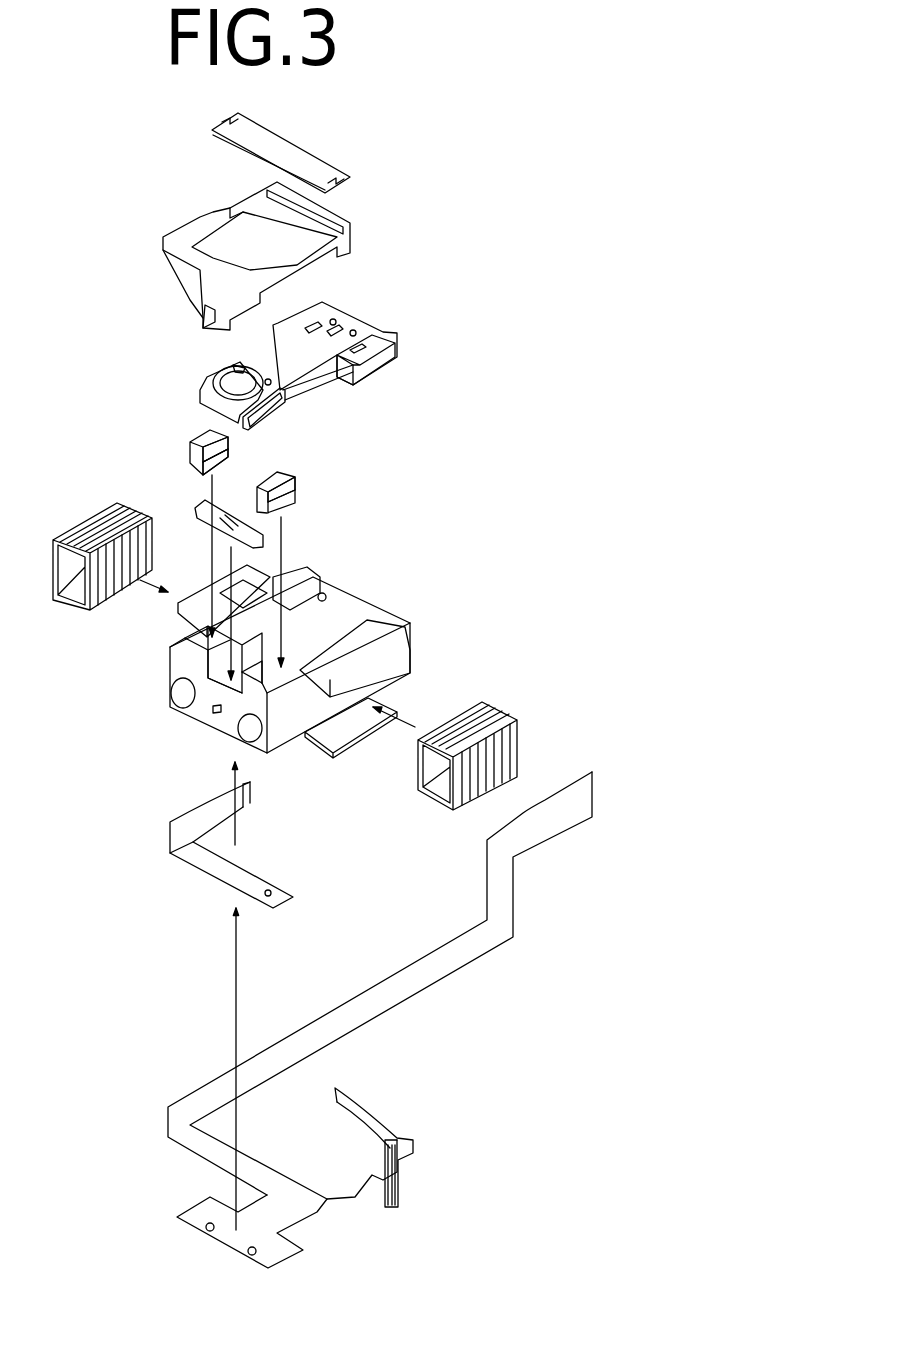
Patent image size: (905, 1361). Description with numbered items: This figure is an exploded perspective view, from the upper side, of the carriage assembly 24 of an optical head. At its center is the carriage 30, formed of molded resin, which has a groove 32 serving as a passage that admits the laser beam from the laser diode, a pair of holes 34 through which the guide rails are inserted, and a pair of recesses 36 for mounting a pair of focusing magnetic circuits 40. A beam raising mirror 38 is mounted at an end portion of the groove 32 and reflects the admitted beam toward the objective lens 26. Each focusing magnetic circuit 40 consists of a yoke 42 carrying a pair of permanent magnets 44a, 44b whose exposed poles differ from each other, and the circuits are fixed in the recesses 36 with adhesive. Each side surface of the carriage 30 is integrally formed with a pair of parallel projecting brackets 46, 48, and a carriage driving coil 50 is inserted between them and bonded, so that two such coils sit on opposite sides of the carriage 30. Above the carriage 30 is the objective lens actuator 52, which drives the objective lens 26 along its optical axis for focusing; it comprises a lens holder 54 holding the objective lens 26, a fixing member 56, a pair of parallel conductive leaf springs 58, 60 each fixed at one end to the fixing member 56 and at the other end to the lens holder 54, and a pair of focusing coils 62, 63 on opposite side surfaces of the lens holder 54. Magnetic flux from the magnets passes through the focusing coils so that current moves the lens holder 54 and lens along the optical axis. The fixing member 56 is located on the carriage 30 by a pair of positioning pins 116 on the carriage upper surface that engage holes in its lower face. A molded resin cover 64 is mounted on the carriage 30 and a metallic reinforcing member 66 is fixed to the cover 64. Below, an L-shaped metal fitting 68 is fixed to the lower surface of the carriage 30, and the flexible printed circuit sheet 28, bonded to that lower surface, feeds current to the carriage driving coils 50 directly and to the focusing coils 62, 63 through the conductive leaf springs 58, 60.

The carriage assembly 24 is at (422, 590).
The objective lens 26 is at (230, 380).
The flexible printed circuit board (FPC sheet) 28 is at (383, 1005).
The carriage 30 is at (278, 653).
The groove 32 is at (342, 627).
The holes 34 is at (187, 693).
The recesses 36 is at (200, 630).
The beam raising mirror 38 is at (200, 507).
The focusing magnetic circuits 40 is at (183, 463).
The yoke 42 is at (193, 445).
The permanent magnet 44a is at (207, 437).
The permanent magnet 44b is at (203, 475).
The bracket 46 is at (197, 593).
The bracket 48 is at (343, 733).
The carriage driving coil 50 is at (93, 522).
The objective lens actuator 52 is at (347, 303).
The lens holder 54 is at (200, 400).
The fixing member 56 is at (377, 337).
The leaf spring 58 is at (272, 365).
The leaf spring 60 is at (367, 603).
The focusing coil 62 is at (280, 417).
The focusing coil 63 is at (200, 383).
The cover 64 is at (195, 222).
The metallic reinforcing member 66 is at (293, 153).
The L-shaped metal fitting 68 is at (203, 858).
The positioning pins 116 is at (322, 585).